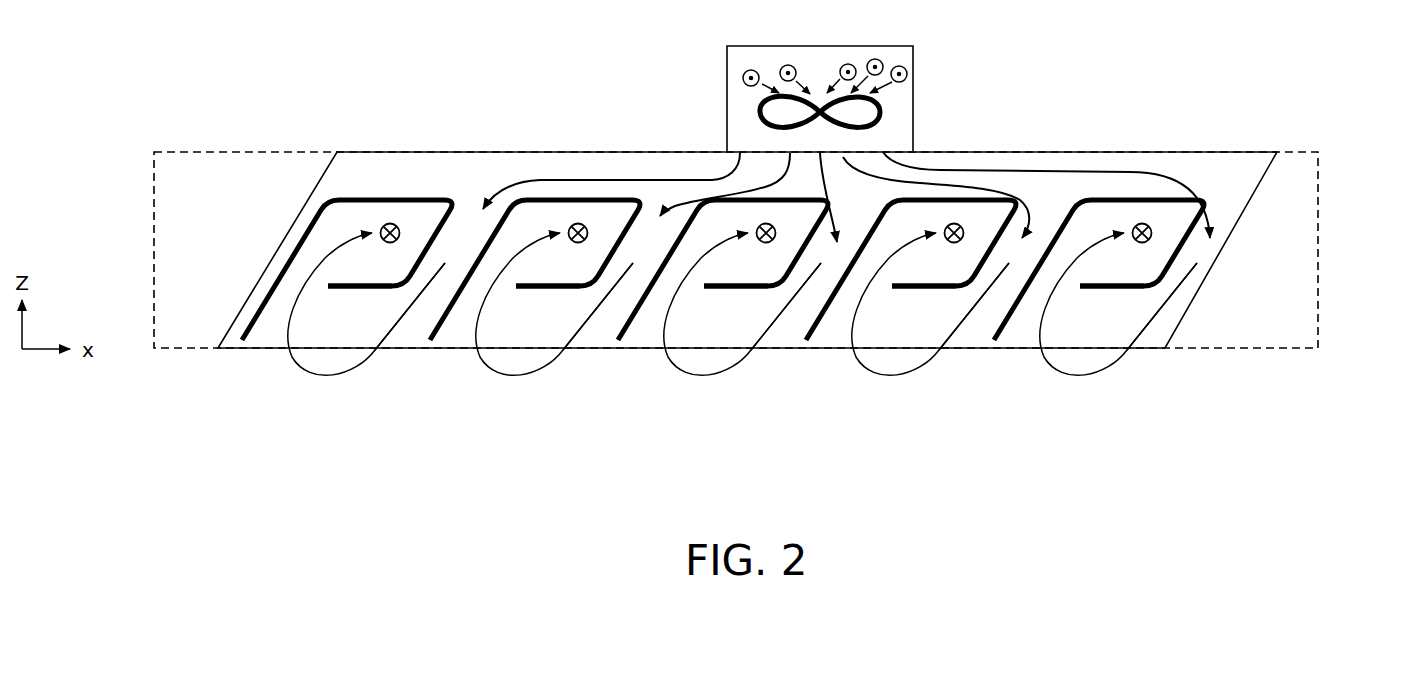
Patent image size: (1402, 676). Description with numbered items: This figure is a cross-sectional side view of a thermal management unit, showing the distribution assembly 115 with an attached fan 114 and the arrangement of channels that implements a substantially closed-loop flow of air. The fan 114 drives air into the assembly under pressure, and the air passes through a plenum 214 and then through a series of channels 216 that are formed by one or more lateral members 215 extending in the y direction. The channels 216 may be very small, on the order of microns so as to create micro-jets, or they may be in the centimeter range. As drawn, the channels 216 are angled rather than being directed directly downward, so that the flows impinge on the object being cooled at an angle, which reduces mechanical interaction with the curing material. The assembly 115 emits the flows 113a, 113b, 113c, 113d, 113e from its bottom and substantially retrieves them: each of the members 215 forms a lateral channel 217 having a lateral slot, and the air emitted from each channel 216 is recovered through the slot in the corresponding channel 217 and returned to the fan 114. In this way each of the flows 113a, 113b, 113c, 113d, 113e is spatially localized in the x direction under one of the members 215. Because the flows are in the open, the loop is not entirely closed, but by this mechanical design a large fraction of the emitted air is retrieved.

The flow 113a is at (1080, 378).
The flow 113b is at (892, 378).
The flow 113c is at (704, 378).
The flow 113d is at (516, 378).
The flow 113e is at (328, 378).
The fan 114 is at (915, 92).
The distribution assembly 115 is at (1318, 250).
The plenum 214 is at (529, 165).
The lateral member 215 is at (1010, 322).
The channel 216 is at (422, 307).
The lateral channel 217 is at (355, 273).